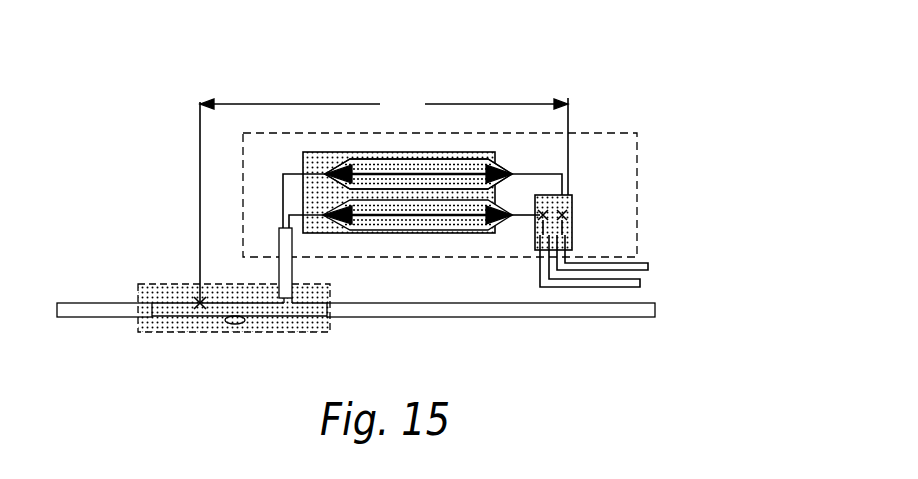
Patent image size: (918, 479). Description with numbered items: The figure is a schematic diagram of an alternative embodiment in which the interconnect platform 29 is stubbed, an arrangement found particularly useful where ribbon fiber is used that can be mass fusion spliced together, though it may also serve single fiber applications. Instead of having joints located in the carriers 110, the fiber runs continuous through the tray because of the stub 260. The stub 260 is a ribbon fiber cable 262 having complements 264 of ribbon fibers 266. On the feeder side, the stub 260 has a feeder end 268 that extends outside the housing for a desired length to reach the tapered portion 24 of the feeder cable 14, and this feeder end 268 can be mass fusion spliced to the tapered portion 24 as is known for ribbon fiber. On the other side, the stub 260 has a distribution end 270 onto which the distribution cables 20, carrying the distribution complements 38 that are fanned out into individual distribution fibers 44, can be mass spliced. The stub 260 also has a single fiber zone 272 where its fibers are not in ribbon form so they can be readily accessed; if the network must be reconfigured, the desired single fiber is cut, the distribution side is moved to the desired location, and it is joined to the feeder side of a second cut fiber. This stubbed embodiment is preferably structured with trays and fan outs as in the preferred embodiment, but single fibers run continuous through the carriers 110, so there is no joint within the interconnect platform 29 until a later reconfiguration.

The feeder cable 14 is at (97, 312).
The tapered portion 24 is at (157, 295).
The feeder end 268 is at (202, 309).
The stub 260 is at (384, 102).
The interconnect platform 29 is at (625, 133).
The carriers 110 is at (317, 152).
The single fiber zone 272 is at (328, 153).
The distribution fiber 44 is at (467, 155).
The ribbon fibers 266 is at (435, 233).
The complements 264 is at (283, 174).
The ribbon fiber cable 262 is at (292, 262).
The distribution complements 38 is at (528, 174).
The distribution end 270 is at (570, 222).
The distribution cables 20 is at (643, 283).